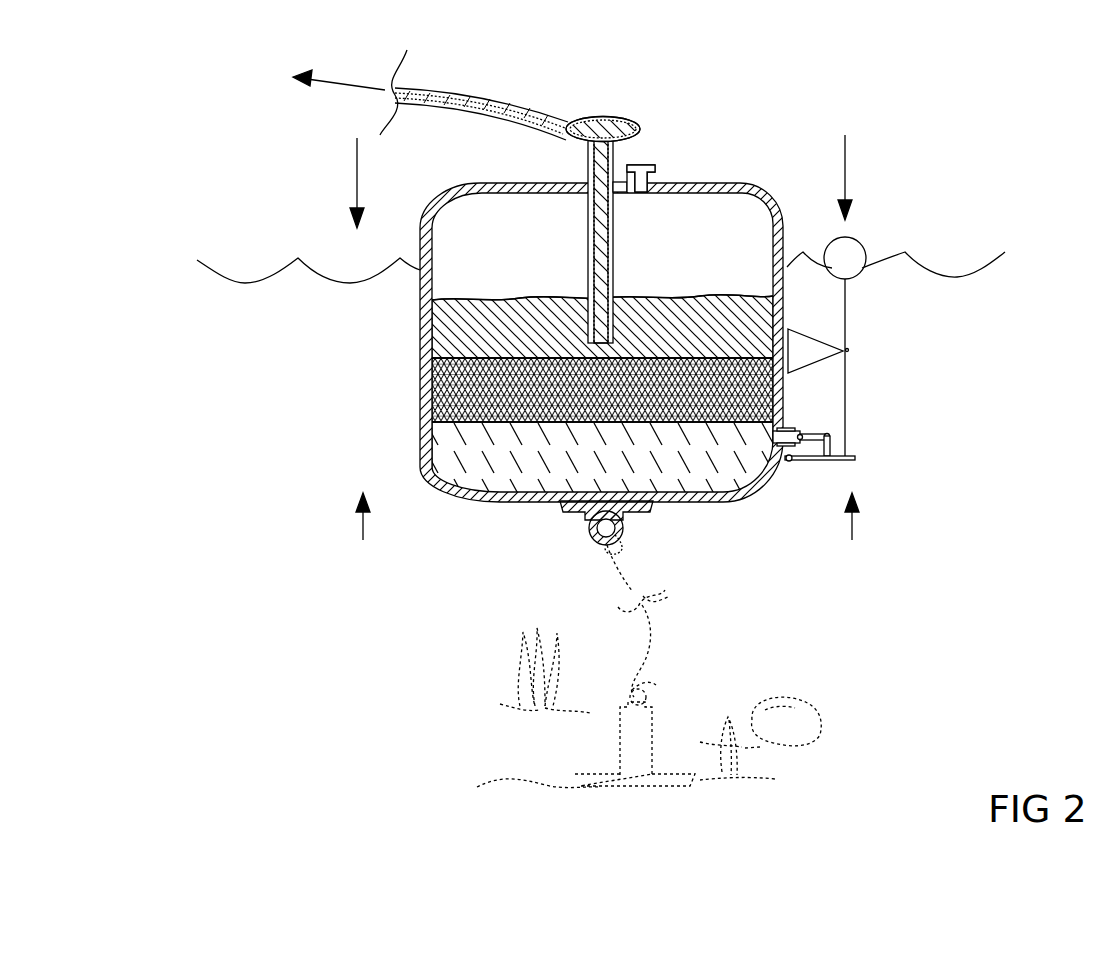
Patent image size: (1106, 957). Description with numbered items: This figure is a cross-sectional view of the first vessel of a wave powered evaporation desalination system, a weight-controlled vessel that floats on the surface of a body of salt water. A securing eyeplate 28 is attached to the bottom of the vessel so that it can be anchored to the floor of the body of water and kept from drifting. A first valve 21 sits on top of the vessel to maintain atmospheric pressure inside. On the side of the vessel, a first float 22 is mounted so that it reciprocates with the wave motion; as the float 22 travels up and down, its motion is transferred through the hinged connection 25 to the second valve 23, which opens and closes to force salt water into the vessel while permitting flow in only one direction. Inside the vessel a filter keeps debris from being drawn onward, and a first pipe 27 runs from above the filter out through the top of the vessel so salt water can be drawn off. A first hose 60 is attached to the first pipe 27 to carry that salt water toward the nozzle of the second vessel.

The first hose 60 is at (480, 93).
The first pipe 27 is at (605, 117).
The first valve 21 is at (650, 165).
The first float 22 is at (857, 243).
The second valve 23 is at (788, 430).
The hinged connection 25 is at (857, 462).
The securing eyeplate 28 is at (585, 523).